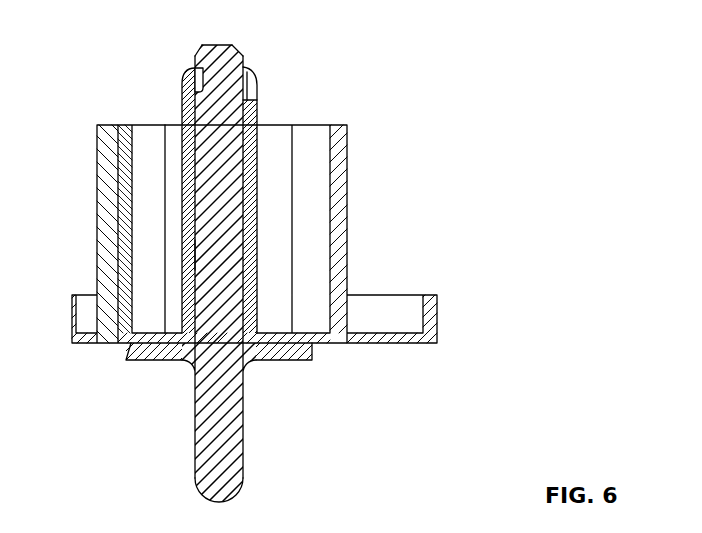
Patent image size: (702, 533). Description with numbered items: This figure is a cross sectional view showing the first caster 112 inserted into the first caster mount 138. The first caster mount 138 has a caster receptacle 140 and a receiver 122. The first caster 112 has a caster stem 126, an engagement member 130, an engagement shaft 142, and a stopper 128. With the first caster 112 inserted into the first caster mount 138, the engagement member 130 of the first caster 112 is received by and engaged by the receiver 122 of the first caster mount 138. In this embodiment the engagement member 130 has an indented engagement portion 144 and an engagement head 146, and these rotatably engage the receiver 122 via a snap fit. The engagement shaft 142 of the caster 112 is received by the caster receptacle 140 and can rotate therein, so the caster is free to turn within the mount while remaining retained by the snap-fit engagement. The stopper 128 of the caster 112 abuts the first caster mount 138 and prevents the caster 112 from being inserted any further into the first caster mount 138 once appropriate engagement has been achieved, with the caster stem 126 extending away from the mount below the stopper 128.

The first caster 112 is at (178, 422).
The receiver 122 is at (183, 82).
The caster stem 126 is at (248, 458).
The stopper 128 is at (265, 361).
The engagement member 130 is at (250, 62).
The first caster mount 138 is at (328, 90).
The caster receptacle 140 is at (181, 133).
The engagement shaft 142 is at (216, 253).
The indented engagement portion 144 is at (260, 92).
The engagement head 146 is at (230, 45).